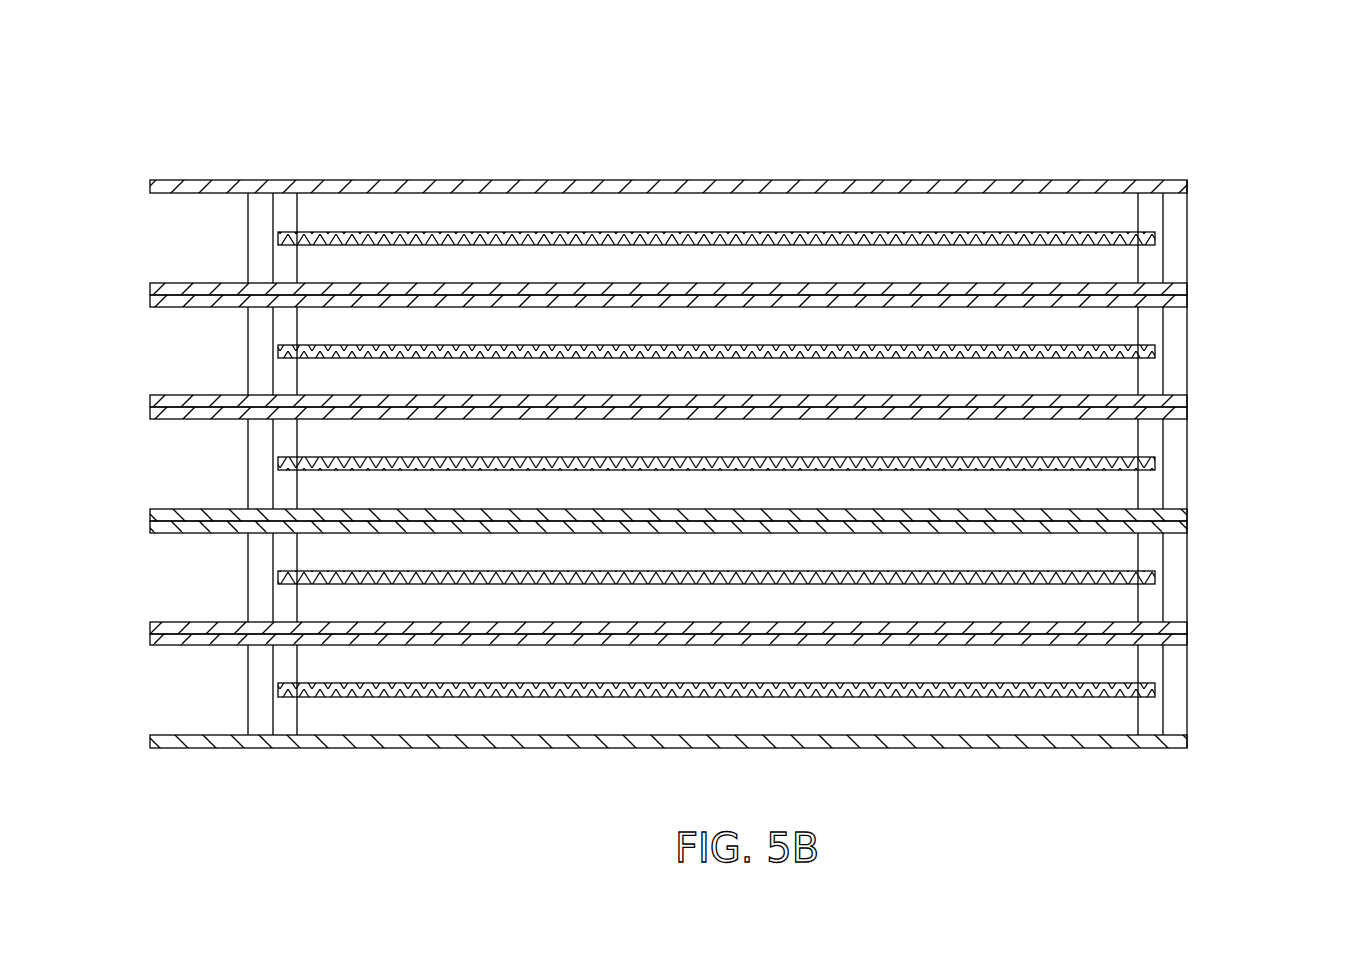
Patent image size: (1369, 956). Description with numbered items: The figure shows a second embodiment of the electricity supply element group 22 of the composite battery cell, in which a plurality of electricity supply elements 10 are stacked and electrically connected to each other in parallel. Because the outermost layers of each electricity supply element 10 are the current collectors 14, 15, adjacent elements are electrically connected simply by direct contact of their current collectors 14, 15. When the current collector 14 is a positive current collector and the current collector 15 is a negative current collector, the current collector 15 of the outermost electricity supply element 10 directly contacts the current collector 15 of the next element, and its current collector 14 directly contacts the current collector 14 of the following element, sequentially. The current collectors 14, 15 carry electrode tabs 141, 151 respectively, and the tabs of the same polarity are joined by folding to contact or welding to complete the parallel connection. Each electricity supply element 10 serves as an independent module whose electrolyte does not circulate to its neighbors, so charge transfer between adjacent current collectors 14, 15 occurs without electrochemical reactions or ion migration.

The electricity supply element group 22 is at (248, 120).
The electricity supply element 10 is at (1302, 168).
The current collector 14 is at (1188, 184).
The current collector 15 is at (1188, 289).
The electrode tab 141 is at (178, 180).
The electrode tab 151 is at (188, 752).